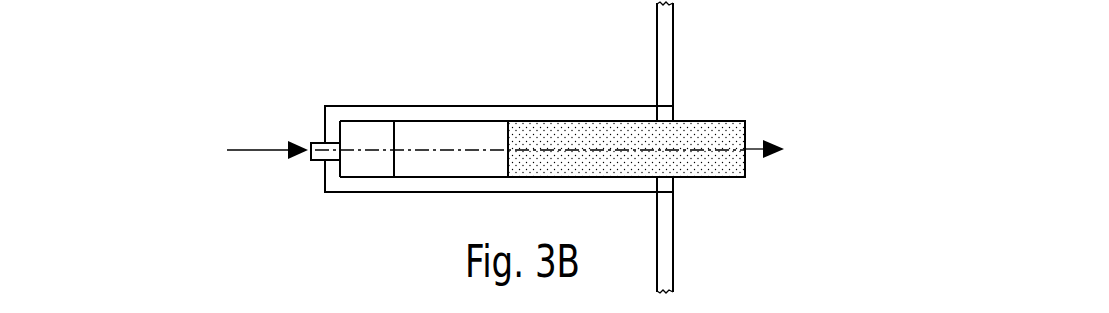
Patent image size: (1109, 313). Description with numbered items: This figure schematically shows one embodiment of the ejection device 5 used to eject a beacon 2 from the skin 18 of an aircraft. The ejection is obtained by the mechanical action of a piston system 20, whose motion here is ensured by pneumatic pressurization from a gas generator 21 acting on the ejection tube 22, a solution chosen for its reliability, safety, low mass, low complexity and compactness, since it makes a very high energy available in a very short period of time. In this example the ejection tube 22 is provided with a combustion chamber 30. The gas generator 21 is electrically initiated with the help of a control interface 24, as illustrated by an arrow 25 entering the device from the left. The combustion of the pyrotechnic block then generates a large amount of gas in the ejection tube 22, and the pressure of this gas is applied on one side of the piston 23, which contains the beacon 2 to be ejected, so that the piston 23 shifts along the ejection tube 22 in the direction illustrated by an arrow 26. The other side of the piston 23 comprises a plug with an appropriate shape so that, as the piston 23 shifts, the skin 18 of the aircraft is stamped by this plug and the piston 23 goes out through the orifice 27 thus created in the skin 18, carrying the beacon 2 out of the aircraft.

The beacon 2 is at (592, 120).
The ejection device 5 is at (505, 133).
The skin 18 is at (667, 250).
The piston system 20 is at (456, 95).
The gas generator 21 is at (363, 137).
The ejection tube 22 is at (530, 94).
The piston 23 is at (627, 178).
The control interface 24 is at (310, 160).
The arrow 25 is at (253, 154).
The arrow 26 is at (761, 143).
The orifice 27 is at (683, 111).
The combustion chamber 30 is at (426, 137).